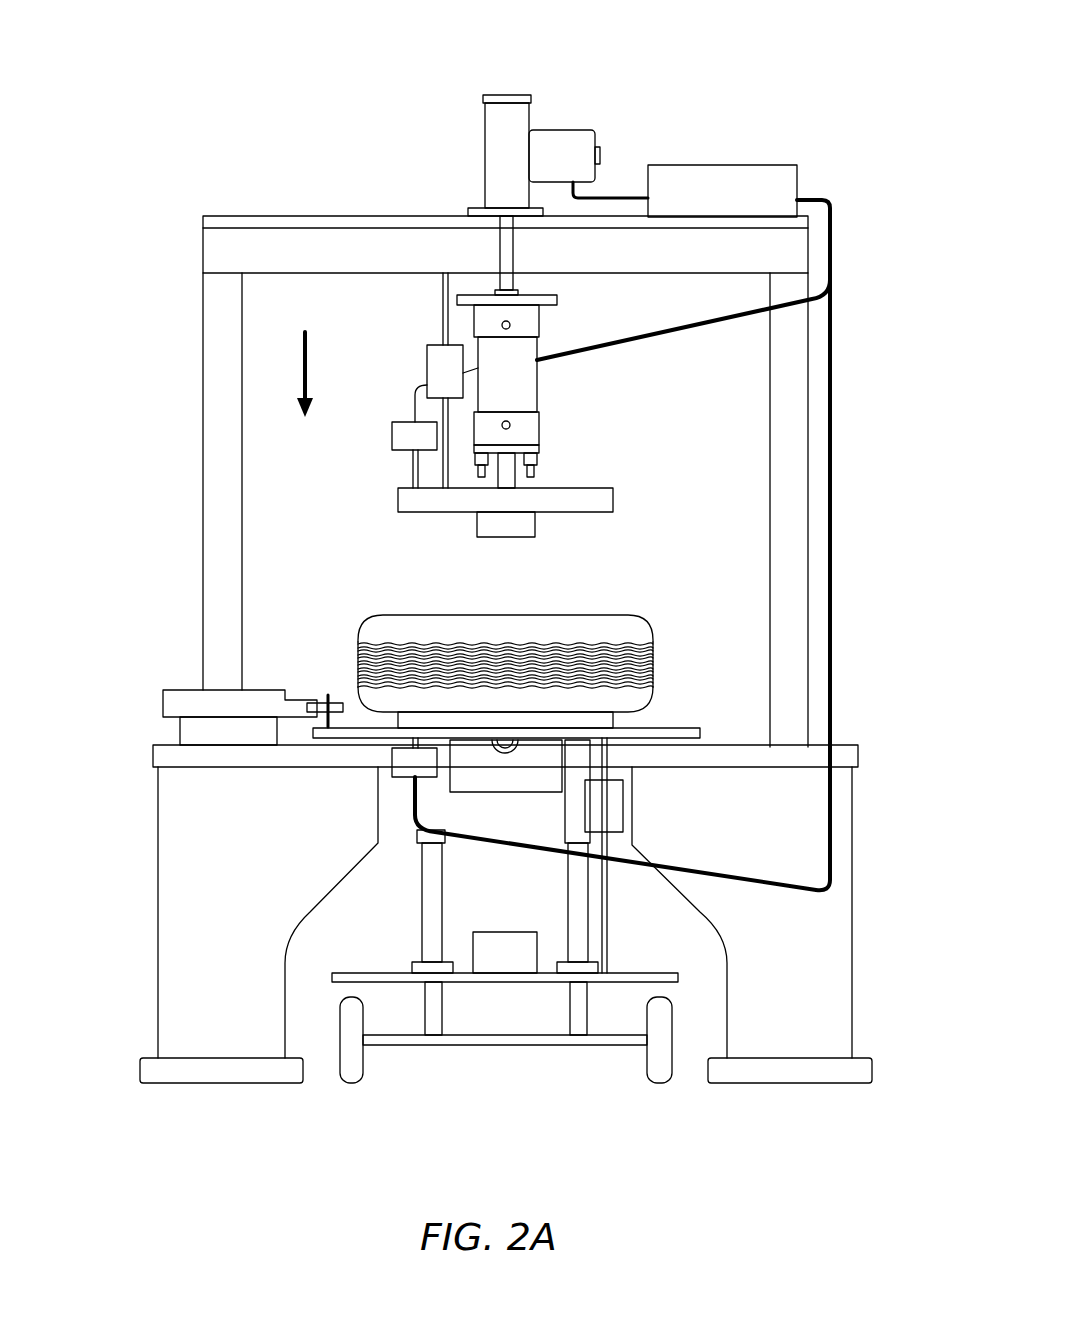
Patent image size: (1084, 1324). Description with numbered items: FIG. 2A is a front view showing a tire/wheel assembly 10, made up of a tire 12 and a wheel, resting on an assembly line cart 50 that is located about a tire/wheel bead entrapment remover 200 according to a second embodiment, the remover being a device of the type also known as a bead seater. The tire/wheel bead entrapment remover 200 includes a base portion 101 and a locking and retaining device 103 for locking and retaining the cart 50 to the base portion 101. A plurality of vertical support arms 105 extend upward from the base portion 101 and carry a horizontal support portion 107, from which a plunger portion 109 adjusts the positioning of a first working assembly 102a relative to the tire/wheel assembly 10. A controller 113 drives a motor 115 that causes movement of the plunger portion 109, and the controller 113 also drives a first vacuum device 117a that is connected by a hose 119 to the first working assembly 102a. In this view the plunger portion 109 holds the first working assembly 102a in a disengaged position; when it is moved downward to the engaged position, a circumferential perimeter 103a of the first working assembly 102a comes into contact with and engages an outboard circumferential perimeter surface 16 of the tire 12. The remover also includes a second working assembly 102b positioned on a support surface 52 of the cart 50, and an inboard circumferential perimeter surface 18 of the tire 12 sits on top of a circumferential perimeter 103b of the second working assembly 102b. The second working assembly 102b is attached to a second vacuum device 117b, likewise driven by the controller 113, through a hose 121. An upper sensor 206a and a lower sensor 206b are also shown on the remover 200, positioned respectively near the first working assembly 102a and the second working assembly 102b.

The tire/wheel bead entrapment remover 200 is at (262, 62).
The motor 115 is at (568, 130).
The controller 113 is at (775, 165).
The horizontal support portion 107 is at (280, 240).
The vertical support arms 105 is at (212, 460).
The base portion 101 is at (170, 910).
The plunger portion 109 is at (565, 396).
The upper sensor 206a is at (435, 362).
The first vacuum device 117a is at (400, 424).
The hose 119 is at (413, 472).
The first working assembly 102a is at (628, 497).
The circumferential perimeter 103a is at (405, 512).
The tire/wheel assembly 10 is at (367, 603).
The tire 12 is at (643, 620).
The outboard circumferential perimeter surface 16 is at (598, 612).
The inboard circumferential perimeter surface 18 is at (513, 708).
The circumferential perimeter 103b is at (528, 718).
The second working assembly 102b is at (625, 720).
The locking and retaining device 103 is at (312, 682).
The support surface 52 is at (352, 722).
The hose 121 is at (407, 735).
The second vacuum device 117b is at (393, 775).
The lower sensor 206b is at (615, 793).
The assembly line cart 50 is at (405, 920).